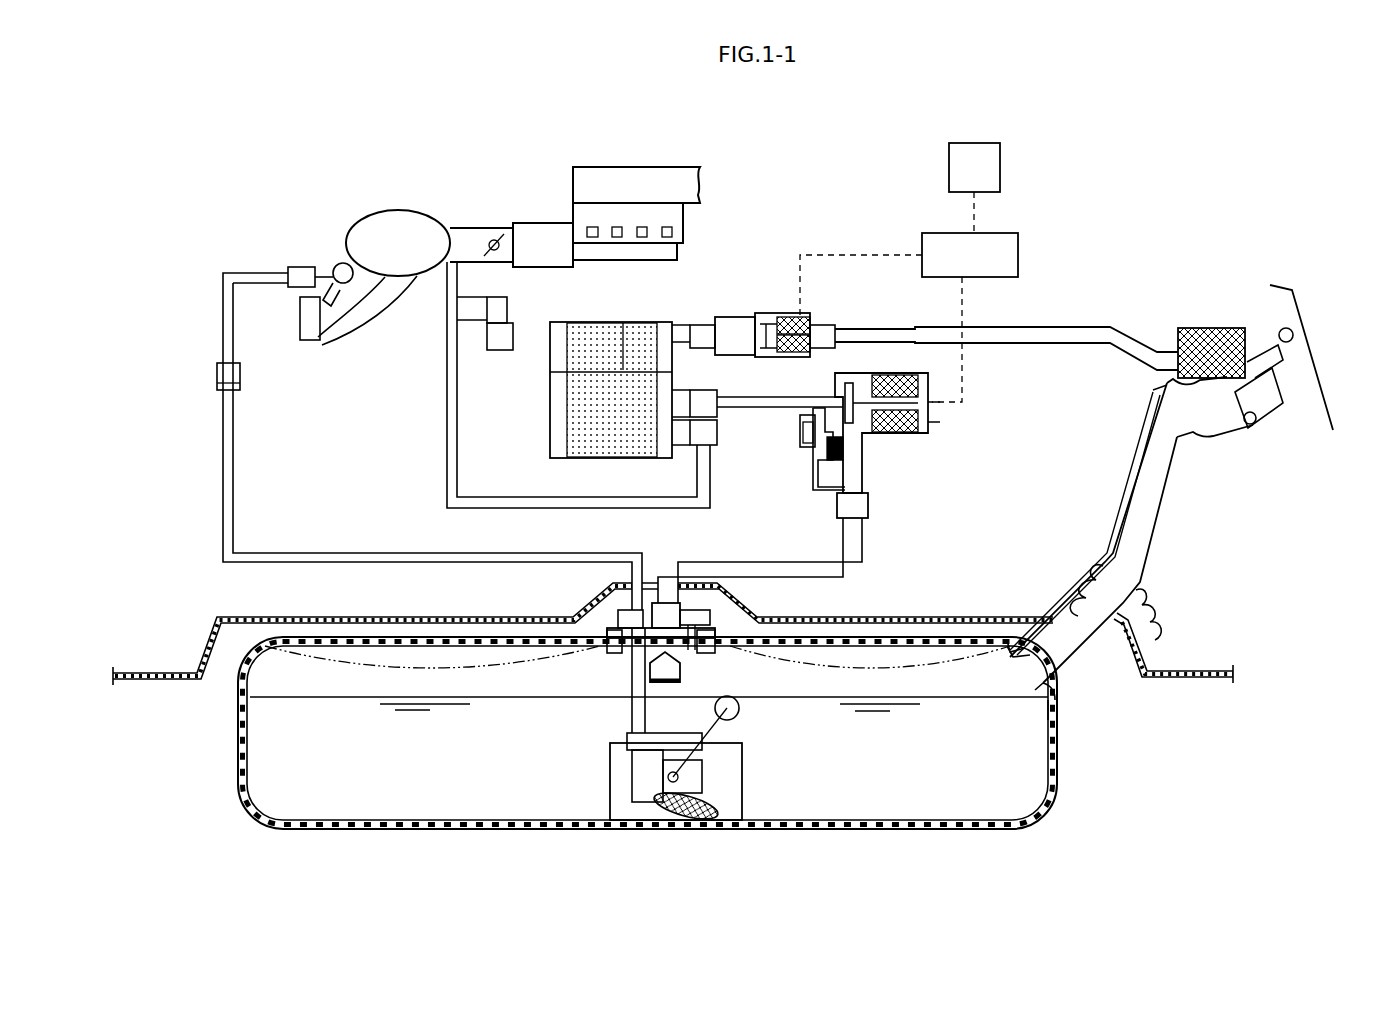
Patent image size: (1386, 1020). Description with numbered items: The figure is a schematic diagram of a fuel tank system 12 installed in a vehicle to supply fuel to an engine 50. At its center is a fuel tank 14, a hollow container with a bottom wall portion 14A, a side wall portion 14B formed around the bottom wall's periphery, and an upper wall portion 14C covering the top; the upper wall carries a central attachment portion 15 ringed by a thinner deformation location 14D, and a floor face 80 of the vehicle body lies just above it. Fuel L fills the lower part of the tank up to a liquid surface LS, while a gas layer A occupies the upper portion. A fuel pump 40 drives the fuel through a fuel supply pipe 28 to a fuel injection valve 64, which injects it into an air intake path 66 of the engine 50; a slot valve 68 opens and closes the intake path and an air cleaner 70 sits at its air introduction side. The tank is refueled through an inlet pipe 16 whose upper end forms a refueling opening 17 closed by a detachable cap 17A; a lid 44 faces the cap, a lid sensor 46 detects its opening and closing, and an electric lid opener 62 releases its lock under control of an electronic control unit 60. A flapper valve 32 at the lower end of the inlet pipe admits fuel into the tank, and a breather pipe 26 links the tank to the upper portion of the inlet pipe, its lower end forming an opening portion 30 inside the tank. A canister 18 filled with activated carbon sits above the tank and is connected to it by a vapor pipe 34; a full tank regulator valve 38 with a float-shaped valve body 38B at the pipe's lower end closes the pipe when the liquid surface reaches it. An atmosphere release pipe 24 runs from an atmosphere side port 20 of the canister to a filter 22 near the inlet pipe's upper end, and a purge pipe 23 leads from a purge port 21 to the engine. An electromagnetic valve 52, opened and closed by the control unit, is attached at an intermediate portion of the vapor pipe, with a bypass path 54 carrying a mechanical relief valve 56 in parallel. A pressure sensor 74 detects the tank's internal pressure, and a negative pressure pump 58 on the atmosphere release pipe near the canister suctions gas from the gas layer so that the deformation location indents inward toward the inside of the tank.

The fuel tank system 12 is at (1112, 272).
The fuel tank 14 is at (1074, 762).
The bottom wall portion 14A is at (475, 829).
The side wall portion 14B is at (240, 732).
The upper wall portion 14C is at (337, 637).
The deformation location 14D is at (478, 640).
The attachment portion 15 is at (715, 628).
The inlet pipe 16 is at (1155, 537).
The refueling opening 17 is at (1233, 445).
The cap 17A is at (1262, 418).
The canister 18 is at (535, 410).
The atmosphere side port 20 is at (676, 325).
The purge port 21 is at (677, 450).
The filter 22 is at (1214, 328).
The purge pipe 23 is at (503, 508).
The atmosphere release pipe 24 is at (1040, 327).
The breather pipe 26 is at (1128, 487).
The fuel supply pipe 28 is at (233, 445).
The opening portion 30 is at (1007, 657).
The flapper valve 32 is at (1022, 690).
The vapor pipe 34 is at (795, 560).
The full tank regulator valve 38 is at (694, 672).
The valve body 38B is at (665, 682).
The fuel pump 40 is at (594, 790).
The lid 44 is at (1318, 372).
The lid sensor 46 is at (1290, 327).
The engine 50 is at (449, 196).
The electromagnetic valve 52 is at (928, 436).
The bypass path 54 is at (813, 476).
The relief valve 56 is at (800, 450).
The negative pressure pump 58 is at (738, 317).
The electronic control unit 60 is at (1004, 233).
The lid opener 62 is at (1000, 163).
The fuel injection valve 64 is at (312, 290).
The air intake path 66 is at (480, 228).
The slot valve 68 is at (500, 240).
The air cleaner 70 is at (683, 228).
The pressure sensor 74 is at (692, 610).
The floor face 80 is at (958, 615).
The gas layer A is at (882, 690).
The fuel L is at (1058, 726).
The liquid surface LS is at (337, 697).